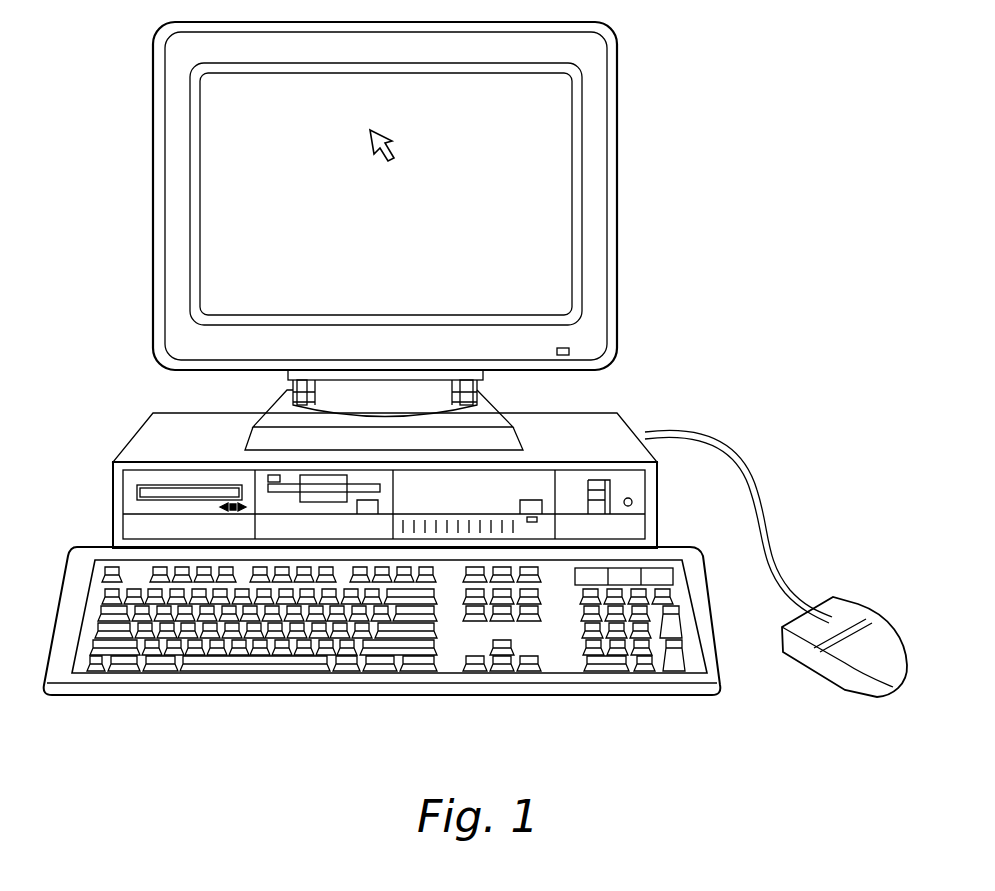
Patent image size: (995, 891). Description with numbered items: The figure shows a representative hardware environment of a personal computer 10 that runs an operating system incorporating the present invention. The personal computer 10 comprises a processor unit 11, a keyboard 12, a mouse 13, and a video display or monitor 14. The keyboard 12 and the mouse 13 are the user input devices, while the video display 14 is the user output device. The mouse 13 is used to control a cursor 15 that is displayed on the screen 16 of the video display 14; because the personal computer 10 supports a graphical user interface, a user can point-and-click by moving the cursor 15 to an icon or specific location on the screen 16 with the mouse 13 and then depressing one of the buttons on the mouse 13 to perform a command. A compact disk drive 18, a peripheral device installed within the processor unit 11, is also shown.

The personal computer 10 is at (475, 386).
The processor unit 11 is at (351, 469).
The keyboard 12 is at (227, 692).
The mouse 13 is at (858, 609).
The video display 14 is at (418, 236).
The cursor 15 is at (384, 137).
The screen 16 is at (403, 237).
The compact disk drive 18 is at (137, 491).